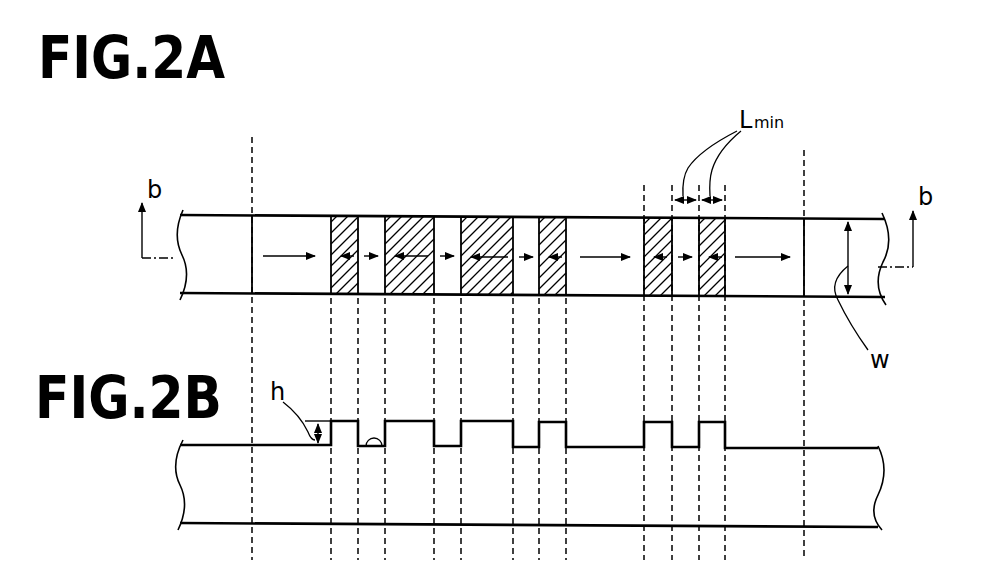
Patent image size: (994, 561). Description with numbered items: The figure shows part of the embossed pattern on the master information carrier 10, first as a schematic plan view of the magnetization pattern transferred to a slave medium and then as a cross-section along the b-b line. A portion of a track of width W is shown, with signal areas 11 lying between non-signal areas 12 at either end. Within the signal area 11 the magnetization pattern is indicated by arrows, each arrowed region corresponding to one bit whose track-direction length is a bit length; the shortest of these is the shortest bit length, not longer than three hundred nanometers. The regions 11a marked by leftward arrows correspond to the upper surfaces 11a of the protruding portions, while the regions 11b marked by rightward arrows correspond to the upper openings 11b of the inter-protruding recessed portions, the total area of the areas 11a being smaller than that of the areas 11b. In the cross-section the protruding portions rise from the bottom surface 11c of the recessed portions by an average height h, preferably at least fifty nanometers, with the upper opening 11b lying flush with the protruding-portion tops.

In FIG. 2B, the master information carrier 10 is at (864, 462).
In FIG. 2A, the signal area 11 is at (801, 167).
In FIG. 2A, the upper surface of protruding portion 11a is at (340, 223).
In FIG. 2B, the upper surface of protruding portion 11a is at (340, 421).
In FIG. 2A, the upper opening of inter-protruding-portion 11b is at (297, 222).
In FIG. 2B, the upper opening of inter-protruding-portion 11b is at (372, 420).
In FIG. 2B, the bottom surface of recessed portion 11c is at (382, 440).
In FIG. 2A, the non-signal area 12 is at (249, 163).